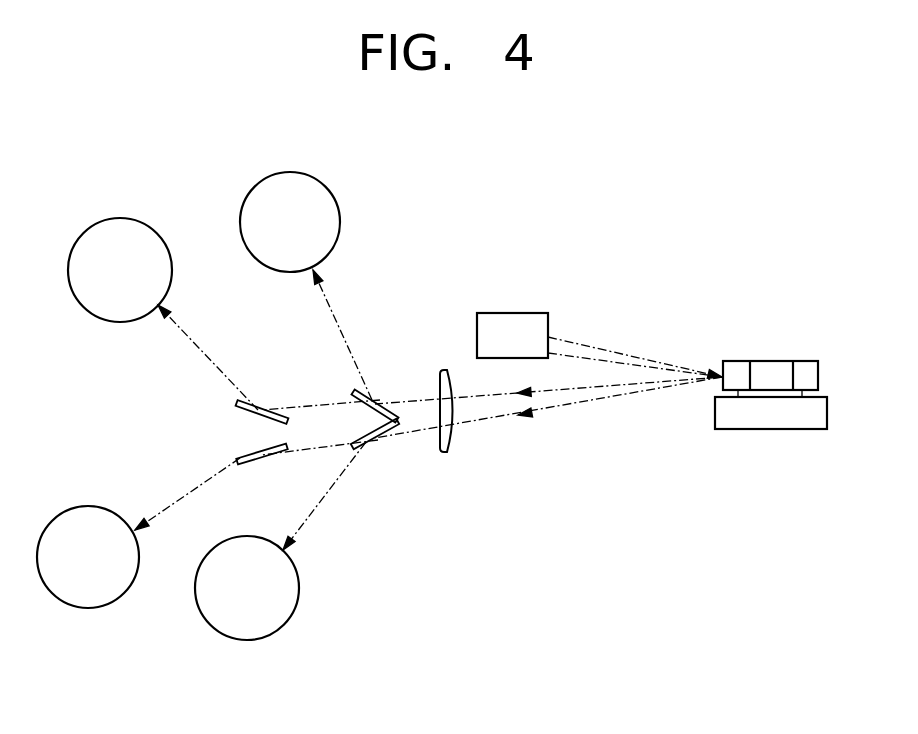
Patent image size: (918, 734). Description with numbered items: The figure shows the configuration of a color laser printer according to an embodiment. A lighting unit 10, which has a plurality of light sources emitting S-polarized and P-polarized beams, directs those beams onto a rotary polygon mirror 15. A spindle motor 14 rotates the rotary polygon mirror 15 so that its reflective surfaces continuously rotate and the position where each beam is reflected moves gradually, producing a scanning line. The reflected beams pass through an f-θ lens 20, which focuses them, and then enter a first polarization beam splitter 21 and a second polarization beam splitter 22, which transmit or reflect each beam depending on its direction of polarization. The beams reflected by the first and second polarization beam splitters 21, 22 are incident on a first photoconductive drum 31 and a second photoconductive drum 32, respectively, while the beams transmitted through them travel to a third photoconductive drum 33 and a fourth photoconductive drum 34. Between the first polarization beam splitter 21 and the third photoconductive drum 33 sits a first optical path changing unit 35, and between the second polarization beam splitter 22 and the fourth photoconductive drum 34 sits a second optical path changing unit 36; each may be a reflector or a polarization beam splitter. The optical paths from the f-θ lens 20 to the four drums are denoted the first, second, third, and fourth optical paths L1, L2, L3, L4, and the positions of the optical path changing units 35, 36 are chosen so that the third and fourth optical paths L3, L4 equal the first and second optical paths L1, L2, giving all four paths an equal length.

The lighting unit 10 is at (517, 308).
The spindle motor 14 is at (772, 429).
The rotary polygon mirror 15 is at (772, 361).
The f-θ lens 20 is at (445, 370).
The first polarization beam splitter 21 is at (377, 402).
The second polarization beam splitter 22 is at (378, 437).
The first photoconductive drum 31 is at (288, 172).
The second photoconductive drum 32 is at (246, 640).
The third photoconductive drum 33 is at (117, 218).
The fourth photoconductive drum 34 is at (84, 506).
The first optical path changing unit 35 is at (240, 406).
The second optical path changing unit 36 is at (241, 452).
The first optical path L1 is at (342, 335).
The second optical path L2 is at (324, 496).
The third optical path L3 is at (208, 357).
The fourth optical path L4 is at (187, 494).